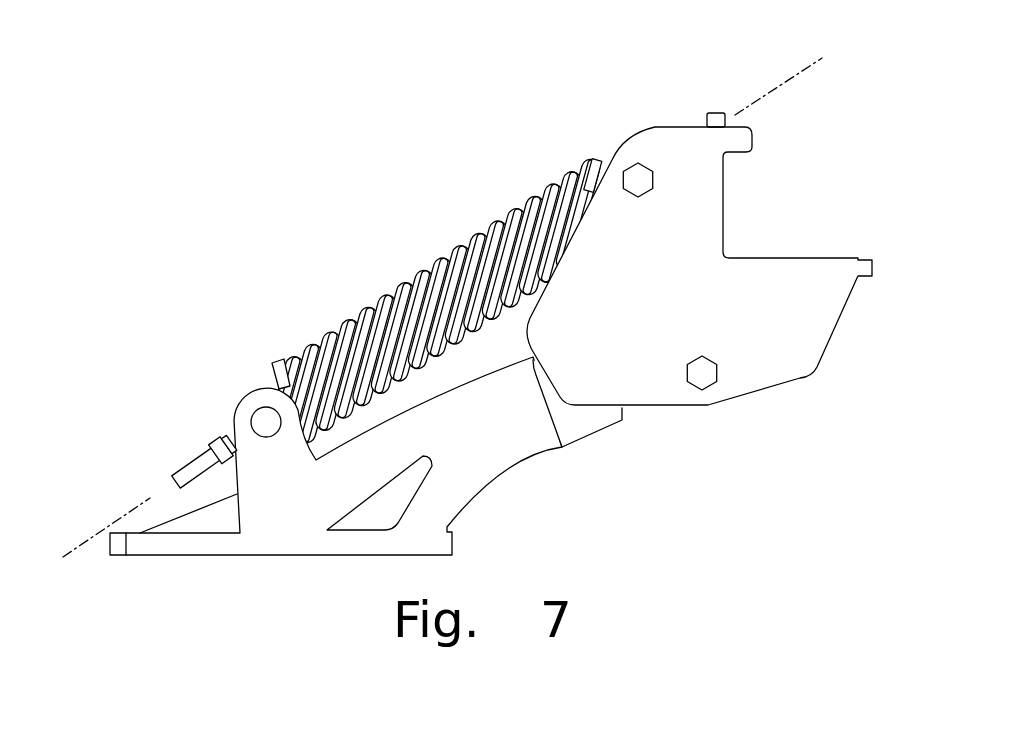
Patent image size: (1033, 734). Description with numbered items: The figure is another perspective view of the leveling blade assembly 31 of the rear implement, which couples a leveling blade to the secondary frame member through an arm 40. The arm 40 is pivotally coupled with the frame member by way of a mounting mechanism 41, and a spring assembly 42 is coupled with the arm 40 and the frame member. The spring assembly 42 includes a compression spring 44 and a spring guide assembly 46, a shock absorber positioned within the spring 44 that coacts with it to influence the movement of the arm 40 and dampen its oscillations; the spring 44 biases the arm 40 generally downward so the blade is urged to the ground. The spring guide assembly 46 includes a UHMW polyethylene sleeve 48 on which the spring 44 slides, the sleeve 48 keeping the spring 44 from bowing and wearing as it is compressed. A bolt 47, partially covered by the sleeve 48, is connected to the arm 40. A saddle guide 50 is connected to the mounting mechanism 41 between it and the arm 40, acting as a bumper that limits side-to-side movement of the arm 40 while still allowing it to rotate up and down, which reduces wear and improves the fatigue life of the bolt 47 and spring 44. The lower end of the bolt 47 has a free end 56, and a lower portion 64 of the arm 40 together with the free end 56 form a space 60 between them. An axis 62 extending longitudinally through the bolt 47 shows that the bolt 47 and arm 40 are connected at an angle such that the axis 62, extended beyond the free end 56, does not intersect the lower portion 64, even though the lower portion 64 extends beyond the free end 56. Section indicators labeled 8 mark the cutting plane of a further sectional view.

The section line 8- 8 is at (103, 590).
The leveling blade assembly 31 is at (470, 369).
The arm 40 is at (465, 505).
The mounting mechanism 41 is at (770, 375).
The spring assembly 42 is at (430, 305).
The spring 44 is at (412, 287).
The spring guide assembly 46 is at (508, 237).
The bolt 47 is at (372, 322).
The sleeve 48 is at (562, 200).
The saddle guide 50 is at (588, 432).
The free end 56 is at (174, 477).
The space 60 is at (157, 488).
The axis 62 is at (137, 505).
The lower portion 64 is at (118, 545).